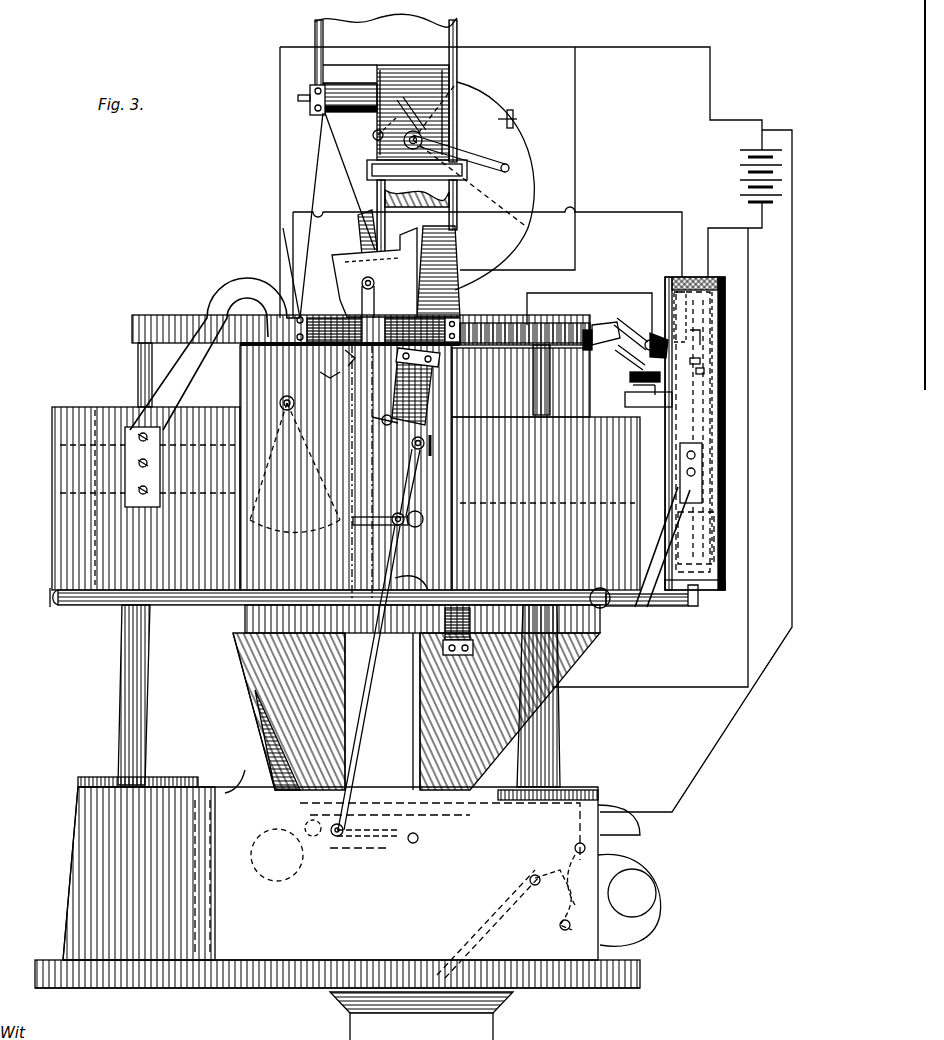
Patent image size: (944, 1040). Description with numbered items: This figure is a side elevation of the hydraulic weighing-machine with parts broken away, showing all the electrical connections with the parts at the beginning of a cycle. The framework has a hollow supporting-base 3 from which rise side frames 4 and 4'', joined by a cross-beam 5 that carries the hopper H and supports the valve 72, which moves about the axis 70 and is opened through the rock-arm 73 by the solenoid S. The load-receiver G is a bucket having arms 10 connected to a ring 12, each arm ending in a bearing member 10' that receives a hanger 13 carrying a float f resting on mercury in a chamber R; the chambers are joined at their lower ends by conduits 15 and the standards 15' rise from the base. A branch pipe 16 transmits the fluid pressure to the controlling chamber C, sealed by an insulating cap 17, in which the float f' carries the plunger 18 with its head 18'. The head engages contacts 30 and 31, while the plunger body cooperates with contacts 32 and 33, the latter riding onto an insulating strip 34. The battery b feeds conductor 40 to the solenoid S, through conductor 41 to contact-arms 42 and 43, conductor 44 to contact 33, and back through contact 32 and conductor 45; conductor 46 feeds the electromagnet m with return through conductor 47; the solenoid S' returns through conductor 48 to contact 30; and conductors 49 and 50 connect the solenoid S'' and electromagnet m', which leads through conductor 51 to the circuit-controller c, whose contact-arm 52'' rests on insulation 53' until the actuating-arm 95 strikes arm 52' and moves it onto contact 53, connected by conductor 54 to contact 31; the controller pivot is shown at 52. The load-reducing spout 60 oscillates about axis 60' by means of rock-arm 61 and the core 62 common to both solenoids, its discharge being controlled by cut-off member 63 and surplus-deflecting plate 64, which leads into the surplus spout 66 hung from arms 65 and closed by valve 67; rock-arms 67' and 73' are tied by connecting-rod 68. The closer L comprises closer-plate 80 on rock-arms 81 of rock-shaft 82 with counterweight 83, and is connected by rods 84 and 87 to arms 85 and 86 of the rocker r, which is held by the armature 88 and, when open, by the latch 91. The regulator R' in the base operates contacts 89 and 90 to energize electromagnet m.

The supporting-base 3 is at (348, 908).
The side frame 4 is at (243, 713).
The armature core 4'' is at (450, 271).
The cross-beam 5 is at (403, 83).
The arm 10 is at (361, 317).
The bearing member 10' is at (115, 331).
The ring 12 is at (500, 336).
The hanger 13 is at (137, 373).
The conduit 15 is at (328, 613).
The standard 15' is at (334, 696).
The branch pipe 16 is at (666, 610).
The cap 17 is at (712, 278).
The plunger 18 is at (733, 430).
The head 18' is at (738, 324).
The contact 30 is at (685, 290).
The contact 31 is at (678, 318).
The contact 32 is at (705, 310).
The contact 33 is at (700, 362).
The strip of insulating material 34 is at (704, 375).
The conductor 40 is at (280, 180).
The conductor 41 is at (282, 172).
The contact-arm 42 is at (411, 446).
The contact-arm 43 is at (433, 447).
The conductor 44 is at (625, 400).
The conductor 45 is at (745, 228).
The conductor 46 is at (734, 716).
The conductor 47 is at (746, 620).
The conductor 48 is at (560, 215).
The conductor 49 is at (576, 166).
The conductor 50 is at (440, 352).
The conductor 51 is at (588, 286).
The contact lever 52 is at (641, 325).
The arm 52' is at (616, 356).
The contact-arm 52'' is at (624, 376).
The contact member 53 is at (644, 400).
The insulation 53' is at (623, 391).
The conductor 54 is at (590, 330).
The load-reducing spout 60 is at (355, 273).
The axis of movement 60' is at (387, 260).
The rock-arm 61 is at (293, 275).
The core 62 is at (398, 389).
The cut-off member 63 is at (345, 353).
The surplus-deflecting plate 64 is at (340, 373).
The overreaching arm 65 is at (222, 285).
The spout 66 is at (300, 470).
The valve 67 is at (336, 482).
The rock-arm 67' is at (271, 460).
The connecting-rod 68 is at (307, 241).
The axis of movement 70 is at (455, 128).
The valve 72 is at (500, 205).
The rock-arm 73 is at (443, 103).
The rock-arm 73' is at (360, 184).
The closer 80 is at (410, 842).
The rock-arm 81 is at (334, 838).
The rock-shaft 82 is at (305, 826).
The counterweight 83 is at (266, 878).
The connecting-rod 84 is at (413, 688).
The arm 85 is at (402, 485).
The arm 86 is at (376, 530).
The connector 87 is at (372, 647).
The swinging armature 88 is at (386, 426).
The movable member 89 is at (548, 905).
The fixed member 90 is at (588, 858).
The latch 91 is at (415, 588).
The actuating-arm 95 is at (606, 330).
The hopper H is at (306, 75).
The solenoid S is at (392, 112).
The solenoid S' is at (313, 319).
The solenoid S'' is at (465, 305).
The fluid-chamber R is at (333, 498).
The regulator R' is at (488, 924).
The load-receiver G is at (245, 640).
The closer L is at (368, 844).
The controlling chamber C is at (696, 538).
The battery b is at (749, 166).
The circuit-controller c is at (624, 363).
The float f is at (135, 466).
The float f' is at (668, 525).
The electromagnet m is at (447, 631).
The electromagnet m' is at (410, 366).
The rocker r is at (402, 528).